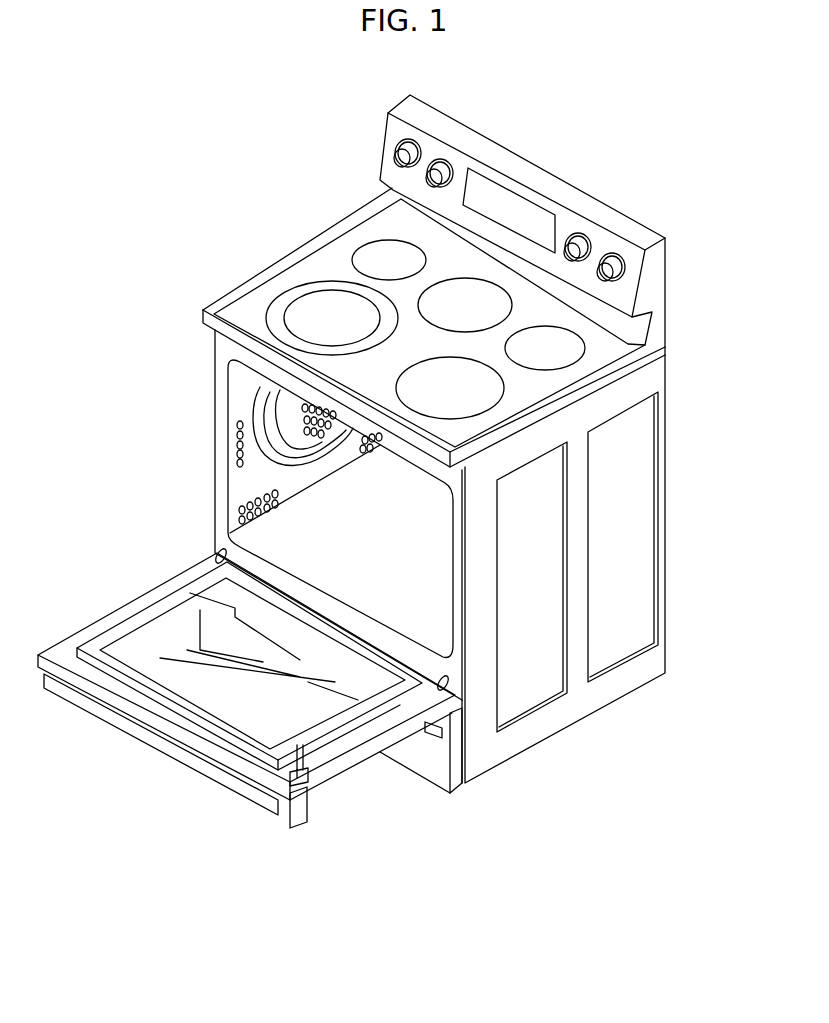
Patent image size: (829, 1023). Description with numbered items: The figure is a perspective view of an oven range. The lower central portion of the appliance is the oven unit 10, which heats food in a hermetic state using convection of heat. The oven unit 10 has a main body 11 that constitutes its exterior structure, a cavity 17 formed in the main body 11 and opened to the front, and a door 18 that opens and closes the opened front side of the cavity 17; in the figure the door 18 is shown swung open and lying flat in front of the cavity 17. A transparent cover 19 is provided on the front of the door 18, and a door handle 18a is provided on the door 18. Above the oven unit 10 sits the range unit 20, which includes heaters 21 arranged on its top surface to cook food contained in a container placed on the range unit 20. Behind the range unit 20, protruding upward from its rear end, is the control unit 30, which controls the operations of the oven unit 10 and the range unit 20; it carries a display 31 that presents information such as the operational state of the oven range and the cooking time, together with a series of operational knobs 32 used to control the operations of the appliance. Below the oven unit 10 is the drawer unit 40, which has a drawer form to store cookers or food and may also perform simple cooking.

The oven unit 10 is at (676, 578).
The main body 11 is at (635, 493).
The cavity 17 is at (379, 538).
The door 18 is at (117, 617).
The door handle 18a is at (158, 747).
The transparent cover 19 is at (172, 620).
The range unit 20 is at (265, 276).
The heater 21 is at (370, 252).
The control unit 30 is at (547, 164).
The display 31 is at (488, 193).
The operational knob 32 is at (608, 257).
The drawer unit 40 is at (431, 787).